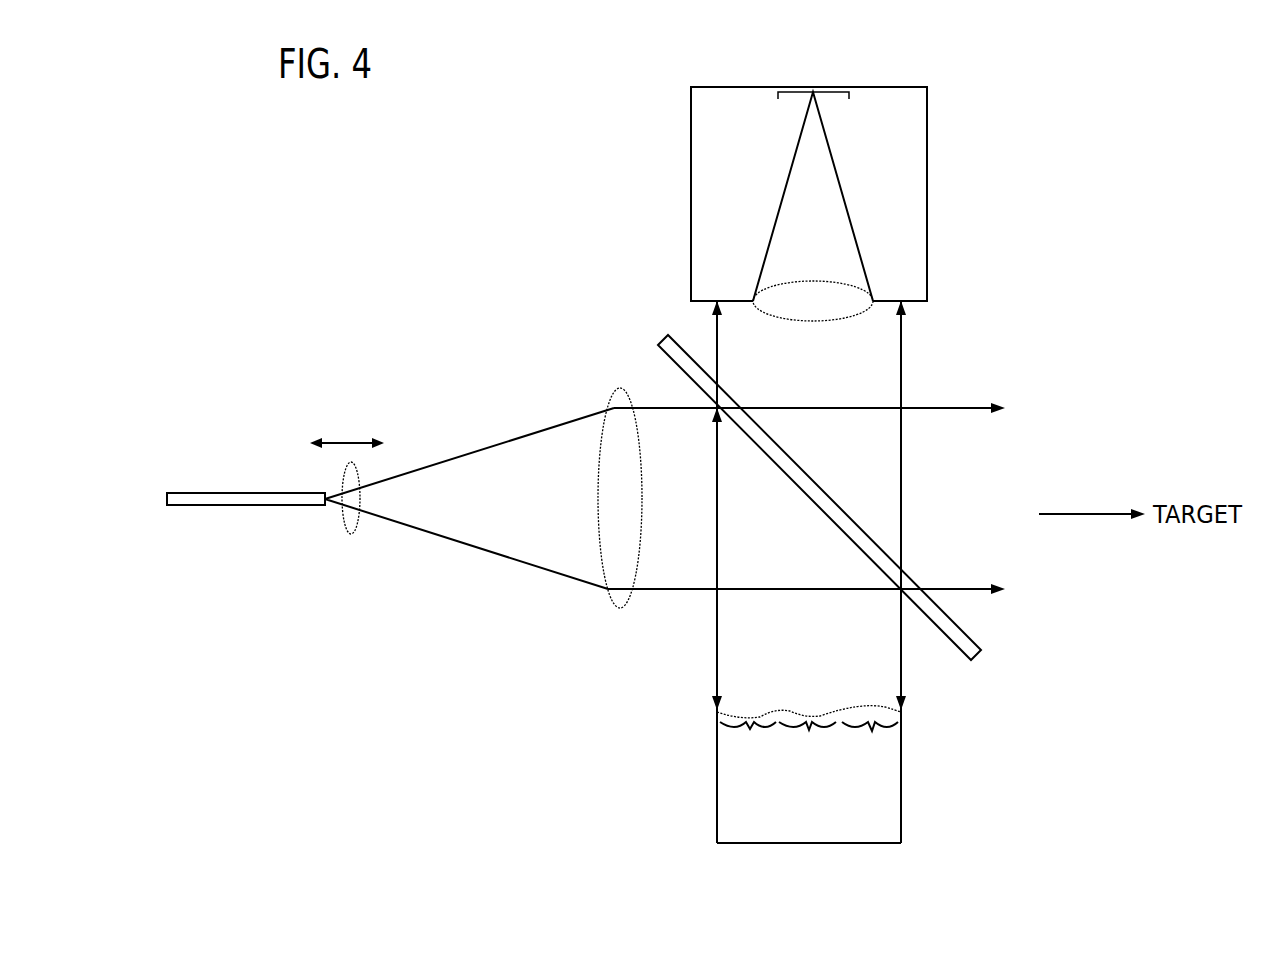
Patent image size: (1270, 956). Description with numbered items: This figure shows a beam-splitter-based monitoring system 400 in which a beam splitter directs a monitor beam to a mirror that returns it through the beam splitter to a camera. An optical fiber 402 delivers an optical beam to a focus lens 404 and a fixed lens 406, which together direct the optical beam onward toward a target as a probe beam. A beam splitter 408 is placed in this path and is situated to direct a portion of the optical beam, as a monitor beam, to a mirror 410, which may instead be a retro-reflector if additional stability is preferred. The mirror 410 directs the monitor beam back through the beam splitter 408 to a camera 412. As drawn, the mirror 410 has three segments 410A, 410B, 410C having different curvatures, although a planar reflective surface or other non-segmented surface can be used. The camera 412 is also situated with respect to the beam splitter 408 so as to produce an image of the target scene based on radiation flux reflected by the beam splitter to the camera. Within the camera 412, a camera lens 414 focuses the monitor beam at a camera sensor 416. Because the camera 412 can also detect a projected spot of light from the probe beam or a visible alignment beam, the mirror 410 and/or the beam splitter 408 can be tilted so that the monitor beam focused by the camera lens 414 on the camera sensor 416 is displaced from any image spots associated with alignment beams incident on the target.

The optical system 400 is at (1110, 273).
The optical fiber 402 is at (270, 506).
The focus lens 404 is at (345, 525).
The fixed lens 406 is at (608, 403).
The beam splitter 408 is at (658, 342).
The mirror 410 is at (854, 774).
The mirror segment 410A is at (748, 735).
The mirror segment 410B is at (808, 735).
The mirror segment 410C is at (872, 735).
The camera 412 is at (927, 150).
The camera lens 414 is at (773, 317).
The camera sensor 416 is at (832, 87).